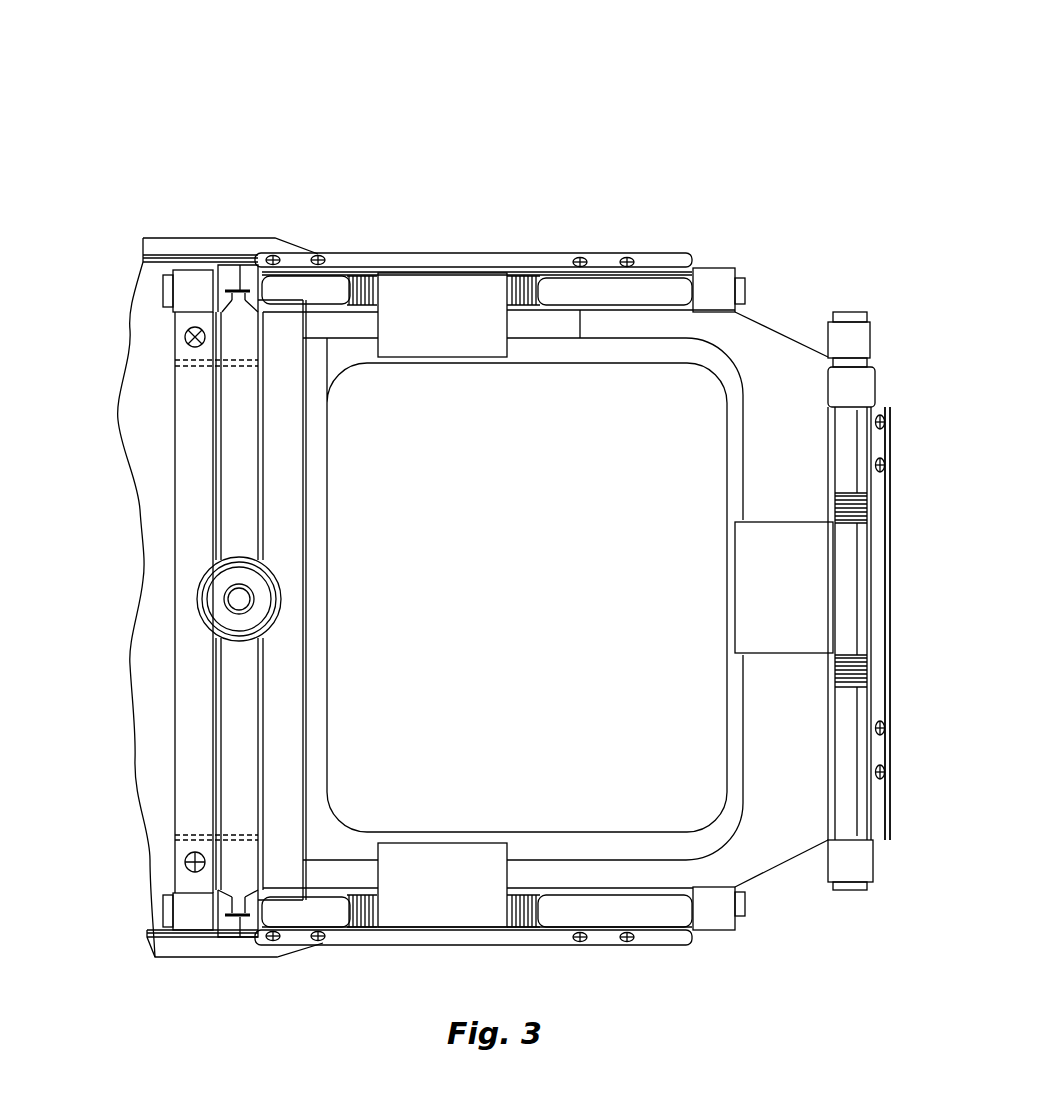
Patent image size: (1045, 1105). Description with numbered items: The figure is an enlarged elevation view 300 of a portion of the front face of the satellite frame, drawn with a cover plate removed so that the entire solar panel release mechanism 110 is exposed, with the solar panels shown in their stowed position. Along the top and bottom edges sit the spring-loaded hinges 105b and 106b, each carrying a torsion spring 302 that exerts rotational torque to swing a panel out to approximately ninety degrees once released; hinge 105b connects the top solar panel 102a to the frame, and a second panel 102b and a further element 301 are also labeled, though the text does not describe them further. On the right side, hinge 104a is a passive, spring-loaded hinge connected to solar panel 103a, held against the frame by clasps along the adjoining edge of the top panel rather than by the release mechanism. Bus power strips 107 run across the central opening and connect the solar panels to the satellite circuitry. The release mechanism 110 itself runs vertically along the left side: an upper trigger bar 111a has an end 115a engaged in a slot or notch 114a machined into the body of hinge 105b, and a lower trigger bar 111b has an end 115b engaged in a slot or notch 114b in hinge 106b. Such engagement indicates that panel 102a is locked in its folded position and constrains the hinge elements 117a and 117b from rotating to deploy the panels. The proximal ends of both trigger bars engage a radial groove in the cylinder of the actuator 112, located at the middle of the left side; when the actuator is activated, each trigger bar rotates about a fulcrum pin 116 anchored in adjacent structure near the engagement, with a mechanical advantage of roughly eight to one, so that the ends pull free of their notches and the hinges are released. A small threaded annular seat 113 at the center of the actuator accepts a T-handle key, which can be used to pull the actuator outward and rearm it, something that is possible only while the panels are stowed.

The enlarged elevation view 300 is at (594, 96).
The bracket block 301 is at (718, 375).
The torsion spring 302 is at (372, 272).
The solar panel 102a is at (147, 258).
The lower housing plate 102b is at (152, 932).
The solar panel 103a is at (930, 586).
The hinge 104a is at (833, 472).
The hinge 105b is at (658, 312).
The hinge 106b is at (663, 893).
The bus power strips 107 is at (447, 843).
The solar panel release mechanism 110 is at (275, 545).
The trigger bar 111a is at (260, 373).
The trigger bar 111b is at (260, 818).
The actuator 112 is at (242, 558).
The threaded annular seat 113 is at (224, 598).
The slot or notch 114a is at (247, 288).
The slot or notch 114b is at (233, 933).
The end 115a is at (243, 300).
The end 115b is at (237, 903).
The fulcrum pin 116 is at (185, 360).
The hinge element 117a is at (228, 273).
The hinge element 117b is at (247, 928).